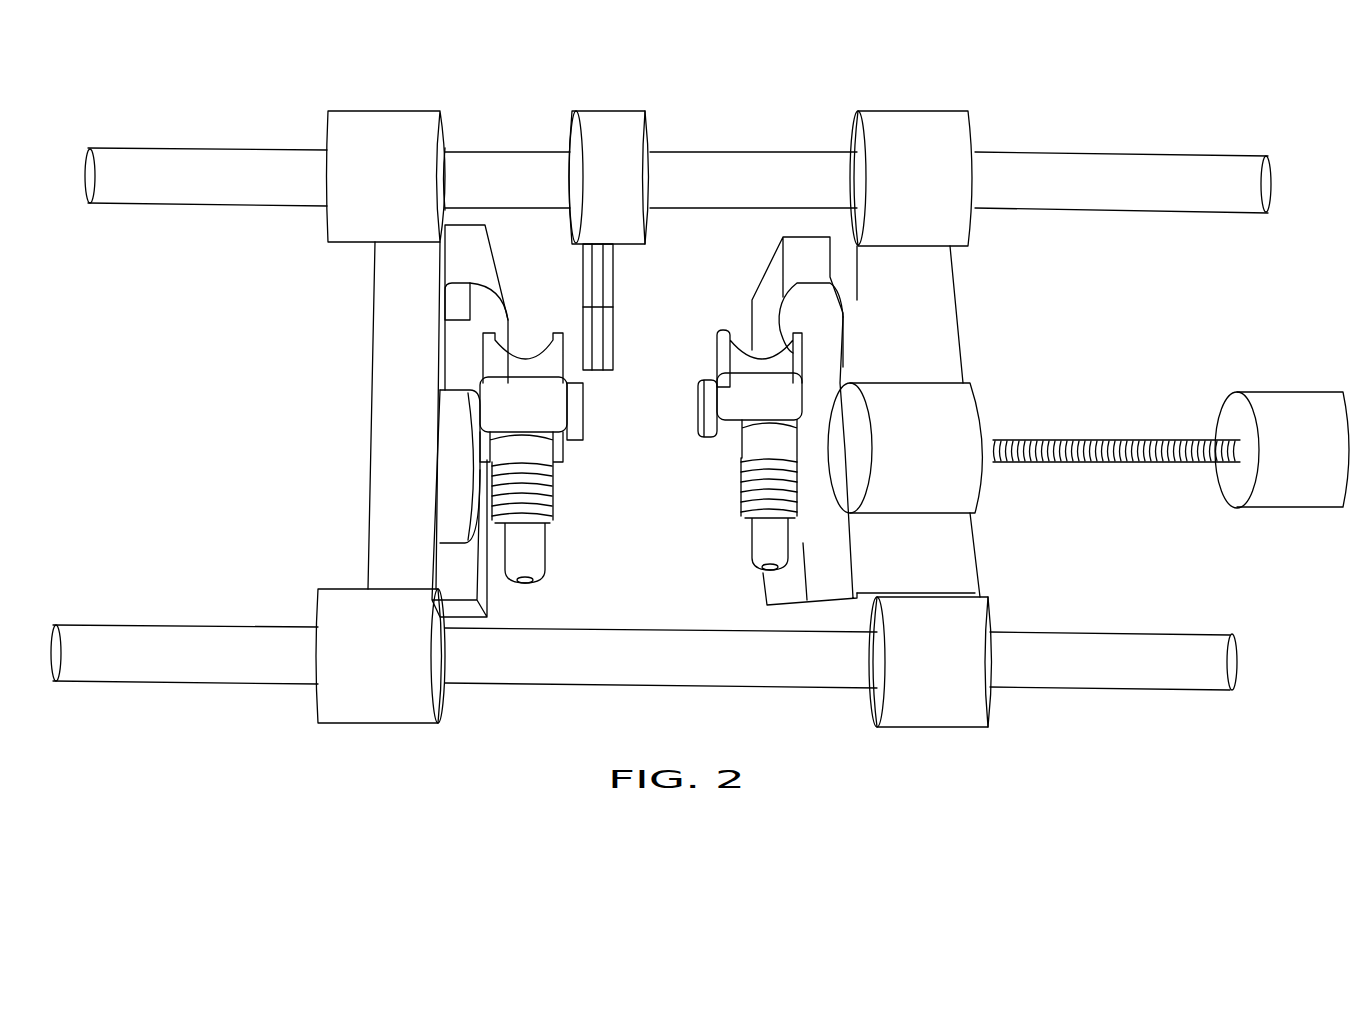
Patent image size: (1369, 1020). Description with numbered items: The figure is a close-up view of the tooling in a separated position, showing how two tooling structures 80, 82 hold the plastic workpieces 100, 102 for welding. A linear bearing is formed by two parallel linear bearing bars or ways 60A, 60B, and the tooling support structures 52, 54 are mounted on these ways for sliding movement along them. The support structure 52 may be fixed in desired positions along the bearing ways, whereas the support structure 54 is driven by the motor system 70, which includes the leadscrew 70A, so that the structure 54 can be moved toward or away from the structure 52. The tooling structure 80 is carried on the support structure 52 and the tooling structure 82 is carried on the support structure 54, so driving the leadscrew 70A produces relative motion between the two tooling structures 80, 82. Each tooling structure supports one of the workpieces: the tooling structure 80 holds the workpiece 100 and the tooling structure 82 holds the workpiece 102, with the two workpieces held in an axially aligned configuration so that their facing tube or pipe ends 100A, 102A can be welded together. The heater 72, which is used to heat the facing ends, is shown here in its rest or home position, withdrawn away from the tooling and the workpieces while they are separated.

The tooling support structure 52 is at (407, 397).
The tooling support structure 54 is at (928, 320).
The linear bearing way 60A is at (175, 208).
The linear bearing way 60B is at (125, 625).
The motor system 70 is at (1277, 390).
The leadscrew 70A is at (1063, 437).
The heater 72 is at (615, 290).
The tooling structure 80 is at (458, 488).
The tooling structure 82 is at (800, 307).
The workpiece 100 is at (537, 407).
The tube or pipe end 100A is at (583, 398).
The workpiece 102 is at (750, 403).
The tube or pipe end 102A is at (703, 383).